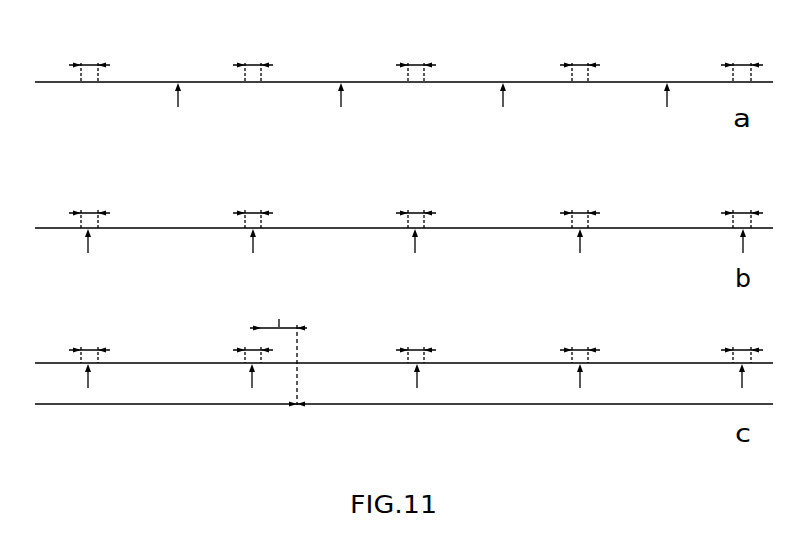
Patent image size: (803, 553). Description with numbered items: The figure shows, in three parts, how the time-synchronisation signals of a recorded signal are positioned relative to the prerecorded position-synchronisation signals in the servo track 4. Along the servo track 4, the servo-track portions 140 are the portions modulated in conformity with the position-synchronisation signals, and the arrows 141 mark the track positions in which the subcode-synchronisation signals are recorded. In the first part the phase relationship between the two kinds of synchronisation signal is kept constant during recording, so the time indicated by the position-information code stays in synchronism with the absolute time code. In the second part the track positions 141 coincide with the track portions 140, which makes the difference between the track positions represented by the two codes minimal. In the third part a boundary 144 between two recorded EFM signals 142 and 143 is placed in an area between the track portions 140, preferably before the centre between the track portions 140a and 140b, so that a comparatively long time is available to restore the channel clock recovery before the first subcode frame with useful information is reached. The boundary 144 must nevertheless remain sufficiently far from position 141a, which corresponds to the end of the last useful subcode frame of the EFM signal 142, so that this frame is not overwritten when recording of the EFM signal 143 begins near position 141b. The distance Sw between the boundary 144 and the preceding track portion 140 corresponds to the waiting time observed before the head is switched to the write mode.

The servo track 4 is at (47, 83).
The servo-track portions modulated in conformity with the position-synchronisation s 140 is at (87, 62).
The track portion 140a is at (252, 348).
The track portion 140b is at (416, 346).
The track positions in which the subcode-synchronisation signals are recorded 141 is at (742, 383).
The position 141a is at (252, 383).
The position 141b is at (417, 383).
The recorded EFM signal 142 is at (145, 405).
The recorded EFM signal 143 is at (500, 405).
The boundary 144 is at (300, 409).
The distance Sw is at (278, 313).